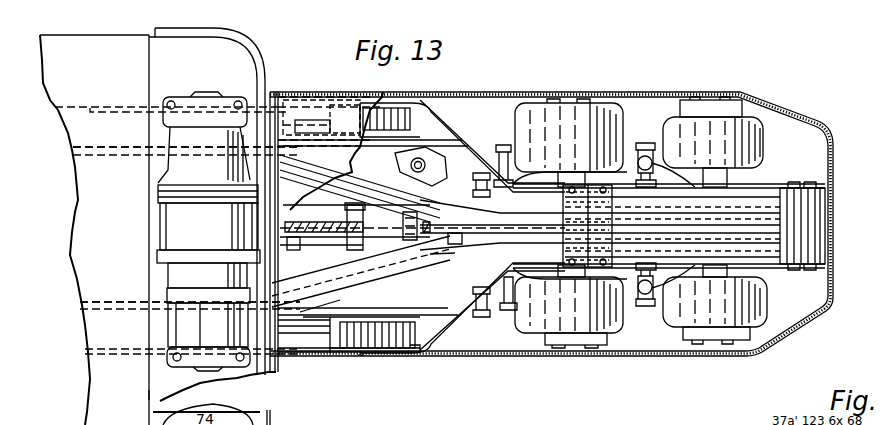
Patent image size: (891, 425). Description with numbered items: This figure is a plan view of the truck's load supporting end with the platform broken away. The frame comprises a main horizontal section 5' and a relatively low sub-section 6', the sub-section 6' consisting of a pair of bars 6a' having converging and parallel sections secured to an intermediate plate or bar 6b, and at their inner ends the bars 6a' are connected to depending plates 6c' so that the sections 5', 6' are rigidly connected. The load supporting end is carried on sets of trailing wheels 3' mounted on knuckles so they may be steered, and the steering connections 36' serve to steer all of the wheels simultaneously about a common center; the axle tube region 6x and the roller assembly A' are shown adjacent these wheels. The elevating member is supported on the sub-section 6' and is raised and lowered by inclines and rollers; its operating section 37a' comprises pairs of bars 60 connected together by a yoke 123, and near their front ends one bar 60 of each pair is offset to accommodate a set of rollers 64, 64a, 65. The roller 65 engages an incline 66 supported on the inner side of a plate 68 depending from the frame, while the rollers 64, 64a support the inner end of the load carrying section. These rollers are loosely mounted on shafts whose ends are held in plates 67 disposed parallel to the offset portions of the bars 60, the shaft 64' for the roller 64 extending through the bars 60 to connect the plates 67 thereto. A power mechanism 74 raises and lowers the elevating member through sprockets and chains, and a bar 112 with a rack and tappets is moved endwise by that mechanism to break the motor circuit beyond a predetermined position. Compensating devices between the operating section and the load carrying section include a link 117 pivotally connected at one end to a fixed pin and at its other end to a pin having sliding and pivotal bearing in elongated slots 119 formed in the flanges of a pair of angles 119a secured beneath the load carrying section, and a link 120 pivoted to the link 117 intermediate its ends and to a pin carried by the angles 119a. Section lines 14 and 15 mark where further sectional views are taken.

The operating section 37a' is at (321, 107).
The roller 65 is at (382, 106).
The roller 64a is at (424, 112).
The steering connections 36' is at (485, 153).
The bars 6a' is at (361, 230).
The link 117 is at (446, 176).
The link 120 is at (317, 250).
The bar 112 is at (397, 240).
The elongated aligned slots 119 is at (403, 242).
The axle tube 6x is at (408, 271).
The sub-section 6' is at (442, 269).
The angles 119a is at (455, 245).
The yoke 123 is at (607, 186).
The bars 60 is at (770, 225).
The intermediate plate or bar 6b is at (793, 187).
The section line 15 is at (638, 108).
The section line 14 is at (73, 342).
The roller assembly A' is at (727, 310).
The trailing wheels 3' is at (525, 359).
The plates 67 is at (417, 347).
The shaft 64' is at (345, 381).
The roller 64 is at (332, 367).
The incline 66 is at (307, 342).
The plates 68 is at (287, 353).
The plates 6c' is at (186, 224).
The main horizontal section 5' is at (128, 397).
The power mechanism 74 is at (208, 231).